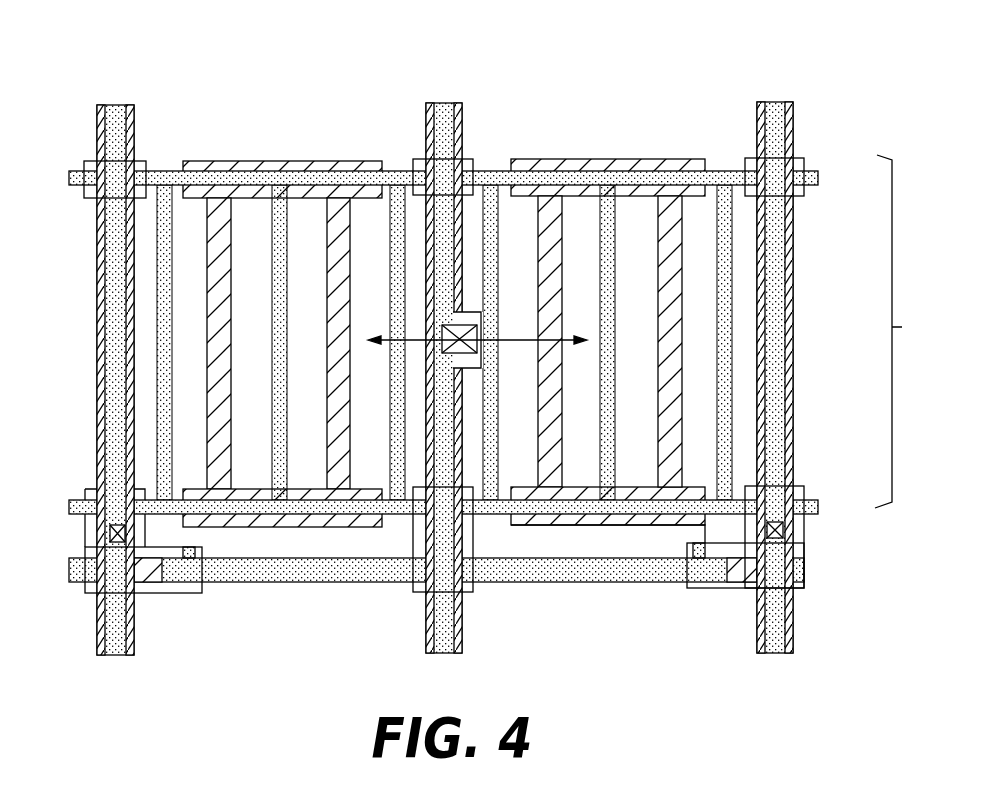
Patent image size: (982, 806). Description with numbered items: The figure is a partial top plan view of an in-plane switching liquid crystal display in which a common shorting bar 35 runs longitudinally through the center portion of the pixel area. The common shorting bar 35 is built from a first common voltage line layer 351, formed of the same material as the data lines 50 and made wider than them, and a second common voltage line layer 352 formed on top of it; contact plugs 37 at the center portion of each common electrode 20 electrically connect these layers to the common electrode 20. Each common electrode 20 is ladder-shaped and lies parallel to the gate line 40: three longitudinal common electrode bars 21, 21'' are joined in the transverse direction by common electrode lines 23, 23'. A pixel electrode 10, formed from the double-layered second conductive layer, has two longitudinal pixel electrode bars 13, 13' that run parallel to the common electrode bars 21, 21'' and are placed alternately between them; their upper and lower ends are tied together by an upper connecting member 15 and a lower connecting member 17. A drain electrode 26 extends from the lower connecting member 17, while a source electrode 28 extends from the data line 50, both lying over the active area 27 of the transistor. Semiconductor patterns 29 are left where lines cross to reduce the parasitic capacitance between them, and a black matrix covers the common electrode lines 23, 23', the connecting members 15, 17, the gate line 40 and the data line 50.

The pixel electrode 10 is at (476, 331).
The pixel electrode bar 13 is at (444, 308).
The pixel electrode bar 13' is at (651, 341).
The upper connecting member 15 is at (613, 163).
The lower connecting member 17 is at (580, 525).
The common electrode 20 is at (905, 331).
The common electrode bar 21 is at (404, 342).
The common electrode bar 21'' is at (789, 342).
The common electrode line 23 is at (476, 176).
The common electrode line 23' is at (469, 504).
The drain electrode 26 is at (708, 573).
The active area 27 is at (804, 545).
The source electrode 28 is at (737, 580).
The semiconductor pattern 29 is at (418, 157).
The common shorting bar 35 is at (480, 330).
The first common voltage line layer 351 is at (472, 359).
The second common voltage line layer 352 is at (440, 103).
The contact plug 37 is at (436, 347).
The gate line 40 is at (292, 582).
The data line 50 is at (137, 125).